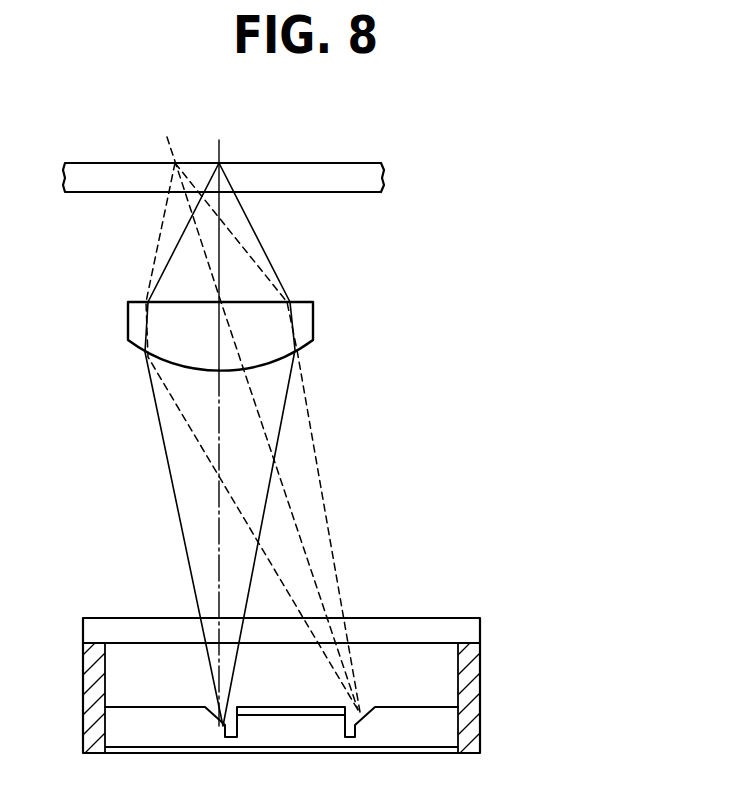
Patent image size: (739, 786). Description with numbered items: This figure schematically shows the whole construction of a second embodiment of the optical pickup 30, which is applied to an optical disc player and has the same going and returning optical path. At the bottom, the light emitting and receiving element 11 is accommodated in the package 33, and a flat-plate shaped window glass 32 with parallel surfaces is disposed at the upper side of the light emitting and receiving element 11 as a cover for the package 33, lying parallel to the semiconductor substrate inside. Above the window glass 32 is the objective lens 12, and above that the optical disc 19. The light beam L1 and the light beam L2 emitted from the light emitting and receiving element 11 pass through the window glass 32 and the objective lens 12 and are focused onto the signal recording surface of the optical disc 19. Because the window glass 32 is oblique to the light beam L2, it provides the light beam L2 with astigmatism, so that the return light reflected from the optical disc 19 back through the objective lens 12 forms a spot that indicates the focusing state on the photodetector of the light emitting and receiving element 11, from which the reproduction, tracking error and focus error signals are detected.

The optical pickup 30 is at (442, 132).
The optical disc 19 is at (343, 167).
The objective lens 12 is at (308, 318).
The first light beam L1 is at (179, 532).
The light beam L2 is at (333, 517).
The window glass 32 is at (432, 617).
The light emitting and receiving element 11 is at (305, 669).
The package 33 is at (98, 692).